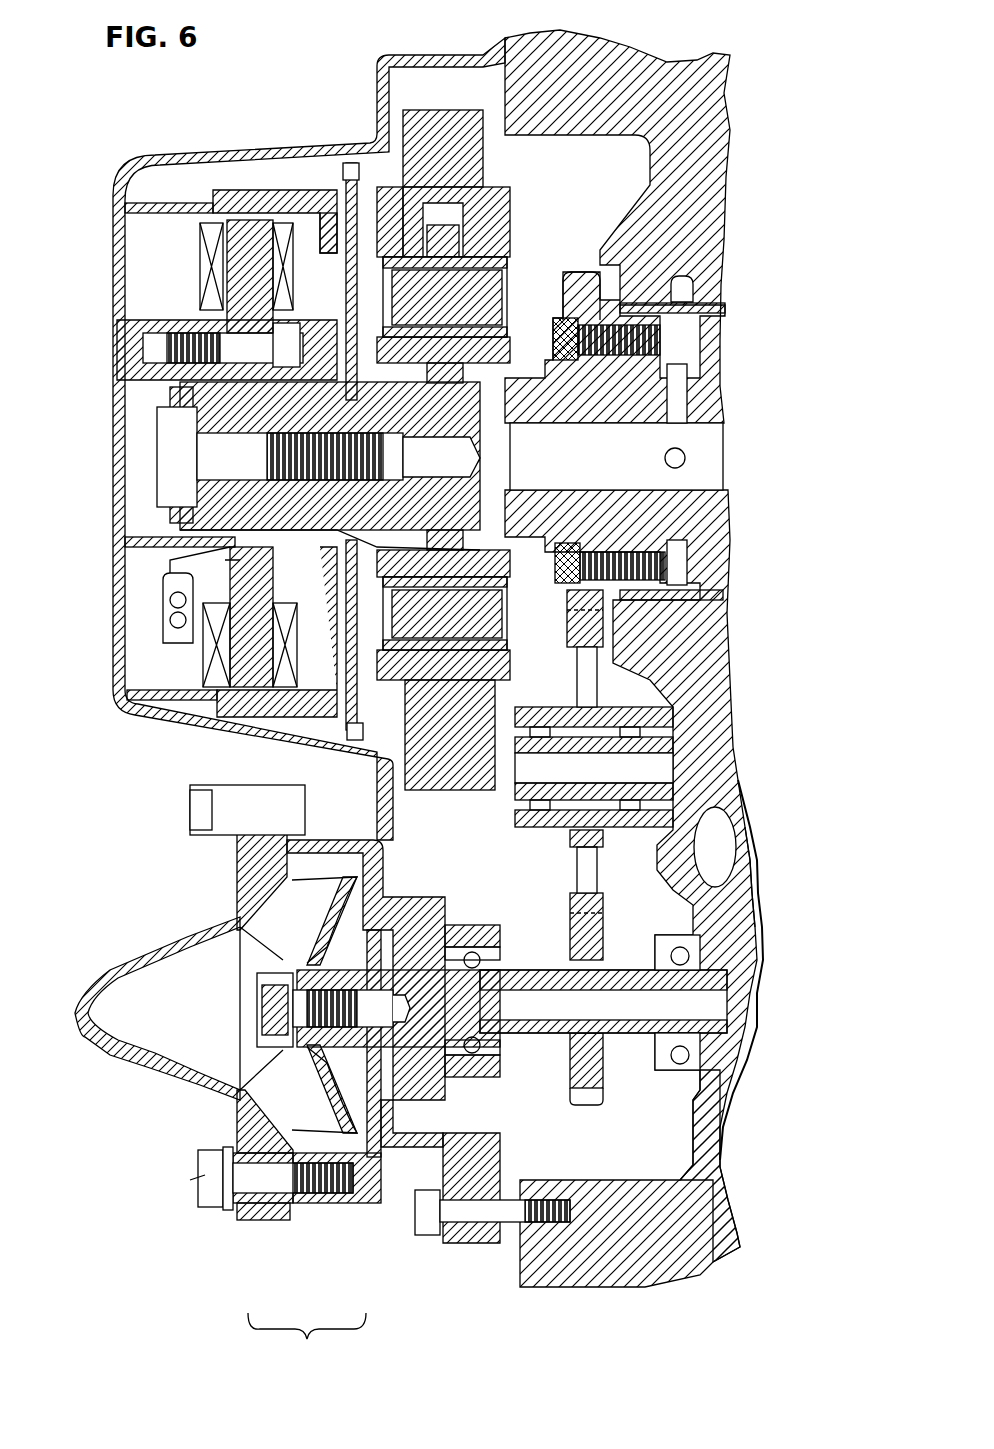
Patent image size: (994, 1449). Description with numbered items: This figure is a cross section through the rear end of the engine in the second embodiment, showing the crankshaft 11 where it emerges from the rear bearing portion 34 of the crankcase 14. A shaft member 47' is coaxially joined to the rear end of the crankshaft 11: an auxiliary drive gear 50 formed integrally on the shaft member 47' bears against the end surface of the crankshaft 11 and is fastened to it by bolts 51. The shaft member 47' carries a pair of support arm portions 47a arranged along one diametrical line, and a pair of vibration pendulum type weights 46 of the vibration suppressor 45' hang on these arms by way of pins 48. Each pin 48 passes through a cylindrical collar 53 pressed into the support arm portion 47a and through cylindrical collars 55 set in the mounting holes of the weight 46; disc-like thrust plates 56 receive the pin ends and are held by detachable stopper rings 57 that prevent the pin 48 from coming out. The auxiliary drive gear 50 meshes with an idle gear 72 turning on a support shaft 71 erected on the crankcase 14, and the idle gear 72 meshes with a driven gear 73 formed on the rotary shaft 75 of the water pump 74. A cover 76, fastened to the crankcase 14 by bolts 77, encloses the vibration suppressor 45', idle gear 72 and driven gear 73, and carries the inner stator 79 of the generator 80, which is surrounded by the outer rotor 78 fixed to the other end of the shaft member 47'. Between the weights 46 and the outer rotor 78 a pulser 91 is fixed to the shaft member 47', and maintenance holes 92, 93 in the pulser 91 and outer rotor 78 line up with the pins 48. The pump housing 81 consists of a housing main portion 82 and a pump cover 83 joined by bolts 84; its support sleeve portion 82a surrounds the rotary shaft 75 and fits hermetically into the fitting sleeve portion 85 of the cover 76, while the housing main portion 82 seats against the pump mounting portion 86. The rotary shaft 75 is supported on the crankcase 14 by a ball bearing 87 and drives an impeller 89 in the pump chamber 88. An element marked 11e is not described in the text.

The crankshaft 11 is at (742, 513).
The gasket 11e is at (690, 297).
The crankcase 14 is at (610, 1262).
The rear bearing portion 34 is at (705, 262).
The vibration suppressor 45' is at (318, 300).
The vibration pendulum type weight 46 is at (447, 110).
The shaft member 47' is at (665, 430).
The support arm portion 47a is at (450, 230).
The pin 48 is at (490, 300).
The auxiliary drive gear 50 is at (590, 272).
The bolt 51 is at (553, 345).
The cylindrical collar 53 is at (395, 187).
The cylindrical collar 55 is at (475, 345).
The thrust plate 56 is at (355, 638).
The stopper ring 57 is at (370, 575).
The support shaft 71 is at (680, 736).
The idle gear 72 is at (600, 893).
The driven gear 73 is at (590, 1100).
The water pump 74 is at (183, 1091).
The rotary shaft 75 is at (636, 1040).
The cover 76 is at (113, 638).
The bolt 77 is at (480, 1212).
The outer rotor 78 is at (263, 190).
The inner stator 79 is at (200, 268).
The generator 80 is at (147, 614).
The pump housing 81 is at (307, 1342).
The housing main portion 82 is at (347, 1205).
The support sleeve portion 82a is at (455, 1095).
The pump cover 83 is at (260, 1220).
The bolt 84 is at (205, 1180).
The fitting sleeve portion 85 is at (420, 897).
The pump mounting portion 86 is at (240, 853).
The ball bearing 87 is at (735, 912).
The pump chamber 88 is at (157, 1008).
The impeller 89 is at (268, 930).
The pulser 91 is at (343, 170).
The maintenance hole 92 is at (345, 712).
The maintenance hole 93 is at (317, 253).